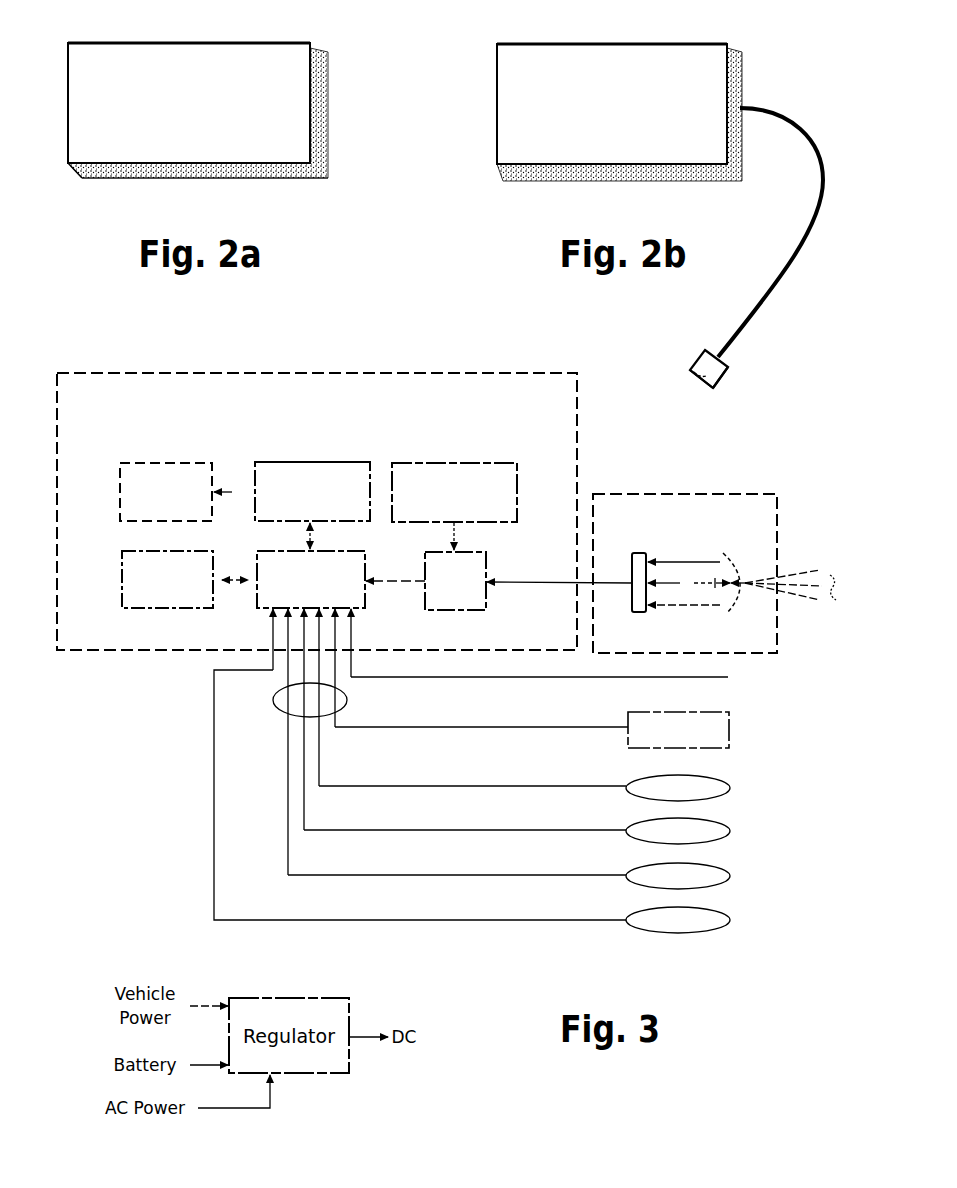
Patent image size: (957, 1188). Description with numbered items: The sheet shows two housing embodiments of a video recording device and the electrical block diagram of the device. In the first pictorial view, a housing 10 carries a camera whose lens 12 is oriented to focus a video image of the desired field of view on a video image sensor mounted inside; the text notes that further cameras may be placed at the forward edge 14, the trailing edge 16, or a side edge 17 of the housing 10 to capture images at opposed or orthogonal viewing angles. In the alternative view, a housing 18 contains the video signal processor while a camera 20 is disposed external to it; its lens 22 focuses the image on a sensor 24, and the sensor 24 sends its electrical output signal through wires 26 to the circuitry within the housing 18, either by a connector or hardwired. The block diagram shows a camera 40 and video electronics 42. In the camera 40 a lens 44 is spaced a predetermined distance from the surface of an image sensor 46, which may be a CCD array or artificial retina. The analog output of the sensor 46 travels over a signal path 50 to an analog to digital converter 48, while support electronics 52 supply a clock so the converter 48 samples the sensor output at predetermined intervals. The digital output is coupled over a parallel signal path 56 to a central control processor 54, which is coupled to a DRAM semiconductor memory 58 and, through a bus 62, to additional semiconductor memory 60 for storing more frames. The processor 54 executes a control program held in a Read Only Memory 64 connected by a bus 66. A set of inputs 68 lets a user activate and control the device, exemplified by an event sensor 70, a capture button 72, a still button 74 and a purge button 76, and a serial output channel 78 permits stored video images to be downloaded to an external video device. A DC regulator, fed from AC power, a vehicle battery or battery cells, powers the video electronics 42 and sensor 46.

In FIG. 2A, the housing 10 is at (294, 58).
In FIG. 2A, the lens 12 is at (220, 113).
In FIG. 2A, the forward edge 14 is at (341, 106).
In FIG. 2A, the trailing edge 16 is at (72, 175).
In FIG. 2A, the side edge 17 is at (283, 178).
In FIG. 2B, the housing 18 is at (707, 60).
In FIG. 2B, the camera 20 is at (688, 352).
In FIG. 2B, the lens 22 is at (723, 399).
In FIG. 2B, the sensor 24 is at (728, 368).
In FIG. 2B, the wires 26 is at (785, 213).
In FIG. 3, the camera 40 is at (734, 526).
In FIG. 3, the video electronics 42 is at (532, 405).
In FIG. 3, the lens 44 is at (714, 568).
In FIG. 3, the image sensor 46 is at (632, 556).
In FIG. 3, the analog to digital converter 48 is at (472, 605).
In FIG. 3, the signal path 50 is at (520, 579).
In FIG. 3, the support electronics 52 is at (503, 475).
In FIG. 3, the central control processor 54 is at (327, 596).
In FIG. 3, the signal path 56 is at (384, 577).
In FIG. 3, the semiconductor memory 58 is at (157, 560).
In FIG. 3, the additional semiconductor memory 60 is at (148, 472).
In FIG. 3, the bus 62 is at (298, 486).
In FIG. 3, the Read Only Memory 64 is at (326, 442).
In FIG. 3, the bus 66 is at (314, 537).
In FIG. 3, the inputs 68 is at (276, 707).
In FIG. 3, the event sensor 70 is at (632, 740).
In FIG. 3, the capture button 72 is at (540, 776).
In FIG. 3, the still button 74 is at (727, 825).
In FIG. 3, the purge button 76 is at (727, 869).
In FIG. 3, the serial output channel 78 is at (463, 680).